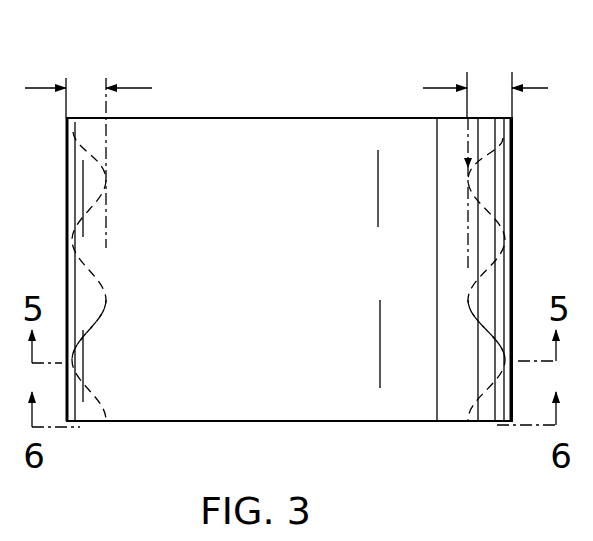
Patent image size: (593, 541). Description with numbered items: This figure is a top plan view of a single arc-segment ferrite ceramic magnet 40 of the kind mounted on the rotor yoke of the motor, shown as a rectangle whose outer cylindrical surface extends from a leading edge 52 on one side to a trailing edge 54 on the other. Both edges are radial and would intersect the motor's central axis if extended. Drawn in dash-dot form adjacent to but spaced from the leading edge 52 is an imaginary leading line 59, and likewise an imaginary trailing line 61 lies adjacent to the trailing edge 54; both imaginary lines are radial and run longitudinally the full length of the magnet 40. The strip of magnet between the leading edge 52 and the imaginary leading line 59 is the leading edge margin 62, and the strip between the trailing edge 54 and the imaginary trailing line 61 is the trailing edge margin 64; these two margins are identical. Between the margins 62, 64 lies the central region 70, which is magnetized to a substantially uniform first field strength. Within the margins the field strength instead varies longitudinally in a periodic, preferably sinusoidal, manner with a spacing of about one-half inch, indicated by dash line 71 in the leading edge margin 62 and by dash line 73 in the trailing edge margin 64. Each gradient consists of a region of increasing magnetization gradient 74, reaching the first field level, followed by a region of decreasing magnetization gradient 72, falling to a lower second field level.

The ferrite ceramic magnet 40 is at (336, 424).
The leading edge 52 is at (66, 182).
The trailing edge 54 is at (512, 190).
The imaginary leading line 59 is at (108, 252).
The imaginary trailing line 61 is at (468, 225).
The leading edge margin 62 is at (143, 88).
The trailing edge margin 64 is at (433, 85).
The central region 70 is at (256, 400).
The dash line 71 is at (97, 325).
The decreasing magnetization gradient region 72 is at (104, 179).
The dash line 73 is at (478, 320).
The increasing magnetization gradient region 74 is at (72, 252).